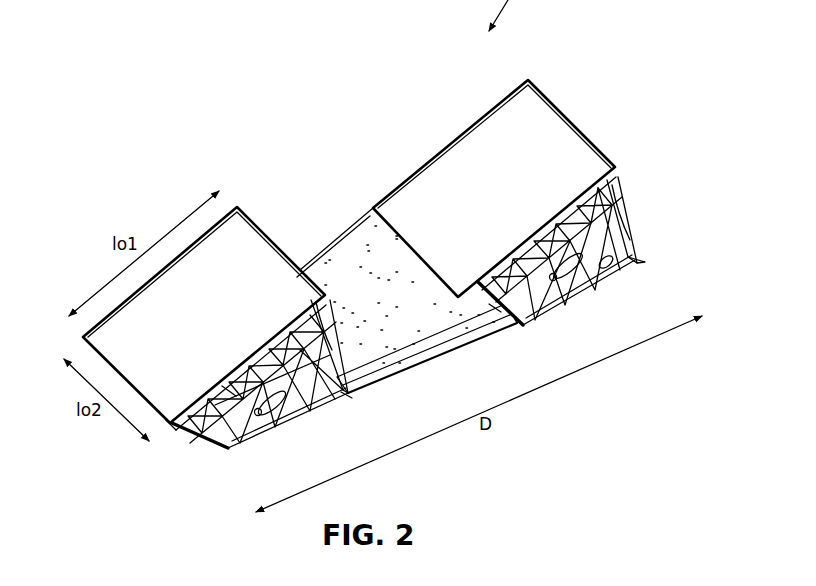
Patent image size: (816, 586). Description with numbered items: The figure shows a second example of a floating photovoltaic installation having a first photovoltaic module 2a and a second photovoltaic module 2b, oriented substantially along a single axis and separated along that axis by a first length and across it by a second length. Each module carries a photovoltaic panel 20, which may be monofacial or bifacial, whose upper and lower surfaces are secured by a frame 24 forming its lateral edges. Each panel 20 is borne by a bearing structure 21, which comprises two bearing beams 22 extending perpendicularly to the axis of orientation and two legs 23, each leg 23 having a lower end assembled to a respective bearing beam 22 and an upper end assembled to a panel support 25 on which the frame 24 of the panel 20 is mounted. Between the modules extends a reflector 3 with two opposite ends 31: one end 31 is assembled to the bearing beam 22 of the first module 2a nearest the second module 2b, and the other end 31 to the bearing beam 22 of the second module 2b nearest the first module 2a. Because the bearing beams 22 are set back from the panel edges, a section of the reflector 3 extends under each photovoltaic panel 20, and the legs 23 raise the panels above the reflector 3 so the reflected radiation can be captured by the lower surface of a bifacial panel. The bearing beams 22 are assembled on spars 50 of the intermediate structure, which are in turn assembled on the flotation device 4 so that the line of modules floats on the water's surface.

The first photovoltaic module 2a is at (584, 103).
The second photovoltaic module 2b is at (215, 357).
The photovoltaic panel 20 is at (397, 185).
The bearing structure 21 is at (203, 434).
The bearing beam 22 is at (519, 326).
The leg 23 is at (318, 370).
The frame 24 is at (170, 430).
The panel support 25 is at (230, 394).
The reflector 3 is at (432, 342).
The end of the reflector 31 is at (358, 397).
The flotation device 4 is at (275, 410).
The spar 50 is at (609, 259).